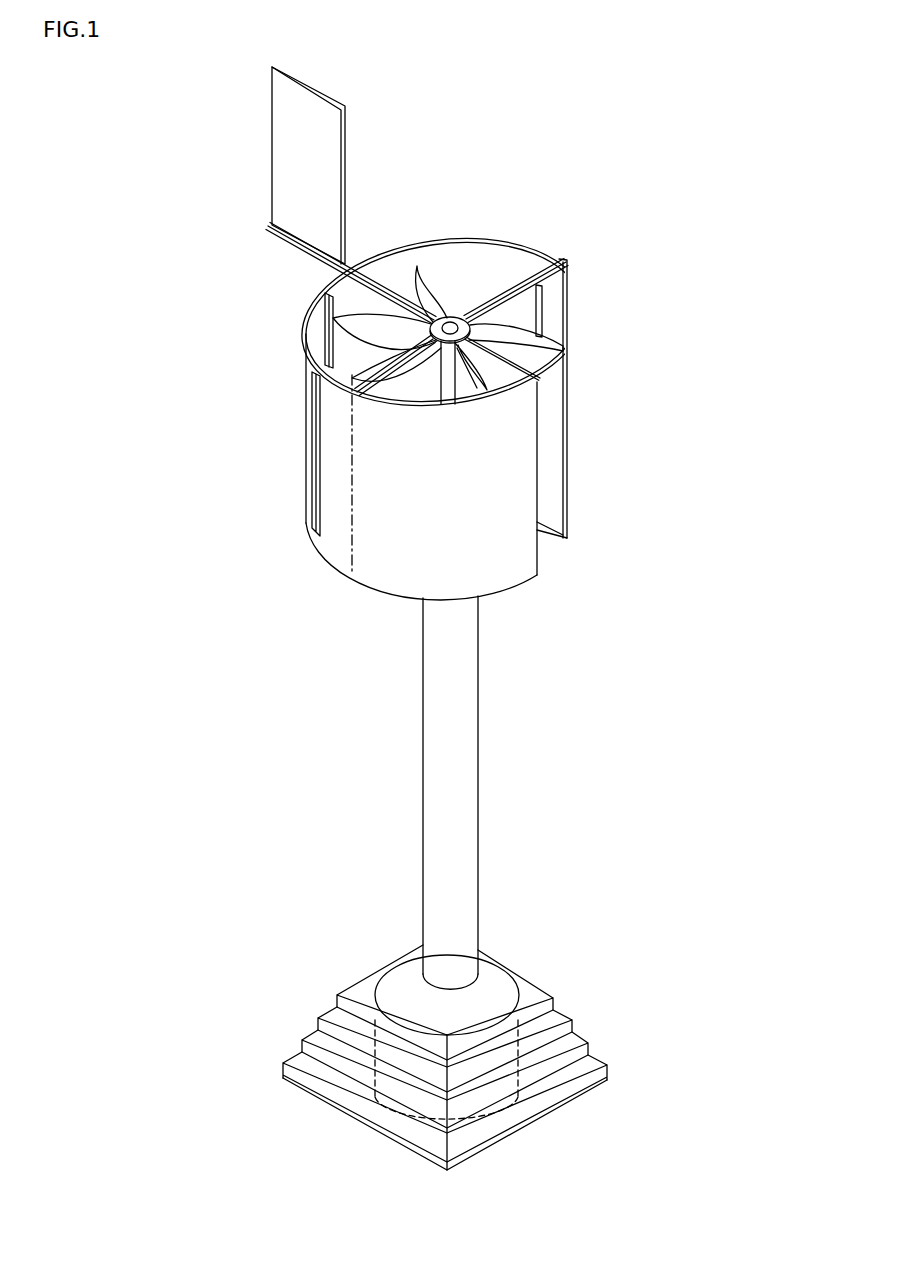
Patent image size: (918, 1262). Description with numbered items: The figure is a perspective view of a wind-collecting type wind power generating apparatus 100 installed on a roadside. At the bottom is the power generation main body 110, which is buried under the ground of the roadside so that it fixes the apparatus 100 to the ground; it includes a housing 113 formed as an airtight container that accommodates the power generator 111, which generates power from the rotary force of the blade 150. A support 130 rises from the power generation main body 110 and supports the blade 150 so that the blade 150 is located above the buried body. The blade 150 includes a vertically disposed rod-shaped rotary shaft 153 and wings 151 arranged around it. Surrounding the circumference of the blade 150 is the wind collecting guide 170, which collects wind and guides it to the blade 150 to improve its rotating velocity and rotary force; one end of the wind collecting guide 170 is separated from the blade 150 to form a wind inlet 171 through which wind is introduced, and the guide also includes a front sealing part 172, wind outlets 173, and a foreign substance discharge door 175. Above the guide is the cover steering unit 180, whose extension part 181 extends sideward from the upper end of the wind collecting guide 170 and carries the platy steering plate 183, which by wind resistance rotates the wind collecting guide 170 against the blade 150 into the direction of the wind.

The wind-collecting type wind power generating apparatus 100 is at (121, 148).
The power generation main body 110 is at (304, 1037).
The power generator 111 is at (347, 1037).
The housing 113 is at (356, 1094).
The support 130 is at (432, 757).
The blade 150 is at (338, 352).
The wings 151 is at (552, 417).
The rotary shaft 153 is at (450, 318).
The wind collecting guide 170 is at (333, 562).
The wind inlet 171 is at (557, 315).
The front sealing part 172 is at (410, 578).
The wind outlets 173 is at (323, 313).
The foreign substance discharge door 175 is at (464, 270).
The cover steering unit 180 is at (192, 167).
The extension part 181 is at (283, 245).
The steering plate 183 is at (286, 177).